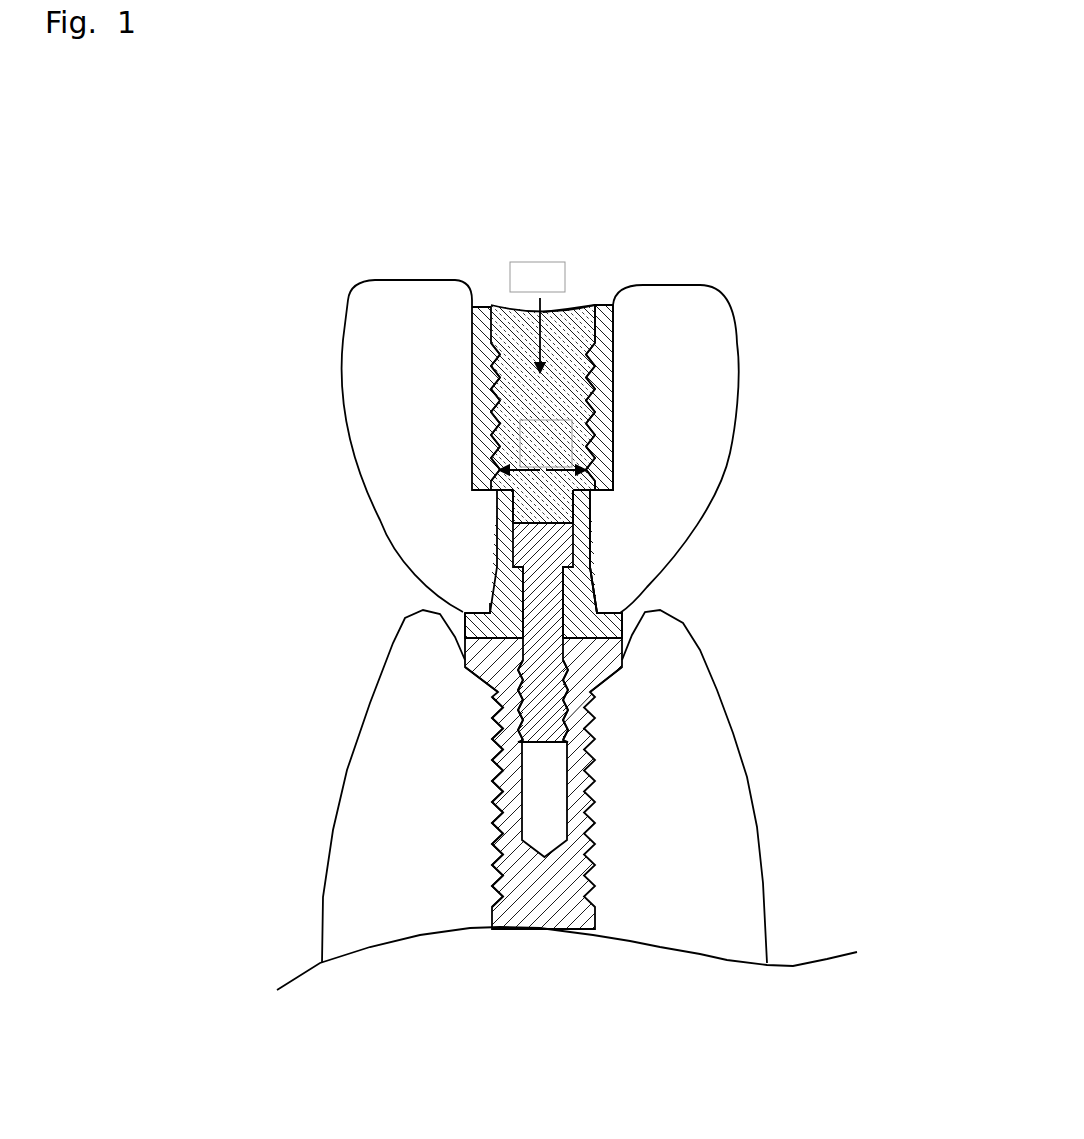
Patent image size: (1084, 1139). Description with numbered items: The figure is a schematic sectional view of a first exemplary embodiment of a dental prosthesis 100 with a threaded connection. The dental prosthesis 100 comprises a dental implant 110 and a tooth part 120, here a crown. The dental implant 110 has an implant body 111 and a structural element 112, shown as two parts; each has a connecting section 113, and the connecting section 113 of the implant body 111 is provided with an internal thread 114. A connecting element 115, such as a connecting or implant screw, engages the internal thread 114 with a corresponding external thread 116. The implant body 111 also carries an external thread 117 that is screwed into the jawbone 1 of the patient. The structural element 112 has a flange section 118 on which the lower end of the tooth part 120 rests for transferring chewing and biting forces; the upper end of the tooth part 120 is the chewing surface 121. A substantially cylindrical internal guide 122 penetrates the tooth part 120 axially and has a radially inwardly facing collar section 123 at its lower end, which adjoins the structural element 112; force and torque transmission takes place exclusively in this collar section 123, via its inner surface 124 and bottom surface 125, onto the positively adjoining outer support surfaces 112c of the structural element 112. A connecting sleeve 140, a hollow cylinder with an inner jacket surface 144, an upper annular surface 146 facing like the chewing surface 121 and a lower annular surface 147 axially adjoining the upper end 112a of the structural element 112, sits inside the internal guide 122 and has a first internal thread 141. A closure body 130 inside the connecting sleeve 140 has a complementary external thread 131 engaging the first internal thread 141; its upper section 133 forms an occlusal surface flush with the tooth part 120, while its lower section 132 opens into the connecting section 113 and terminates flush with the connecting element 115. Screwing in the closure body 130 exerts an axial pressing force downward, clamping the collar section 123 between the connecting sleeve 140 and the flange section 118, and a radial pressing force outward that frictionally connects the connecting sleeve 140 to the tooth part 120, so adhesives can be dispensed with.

The jawbone 1 is at (413, 865).
The dental prosthesis 100 is at (743, 212).
The dental implant 110 is at (640, 683).
The implant body 111 is at (495, 683).
The structural element 112 is at (490, 603).
The upper end of the structural element 112a is at (613, 467).
The outer support surfaces of the structural element 112c is at (590, 562).
The connecting section 113 is at (545, 669).
The internal thread 114 is at (310, 700).
The connecting element 115 is at (560, 548).
The external thread 116 is at (520, 720).
The external thread 117 is at (495, 788).
The flange section 118 is at (465, 621).
The tooth part 120 is at (590, 483).
The chewing surface 121 is at (407, 280).
The internal guide 122 is at (771, 356).
The collar section 123 is at (602, 590).
The inner surface 124 is at (753, 540).
The bottom surface 125 is at (623, 612).
The closure body 130 is at (497, 303).
The external thread 131 is at (492, 425).
The lower section 132 is at (537, 513).
The upper section 133 is at (575, 335).
The connecting sleeve 140 is at (478, 380).
The first internal thread 141 is at (543, 412).
The inner jacket surface 144 is at (320, 412).
The upper annular surface 146 is at (480, 300).
The lower annular surface 147 is at (580, 492).